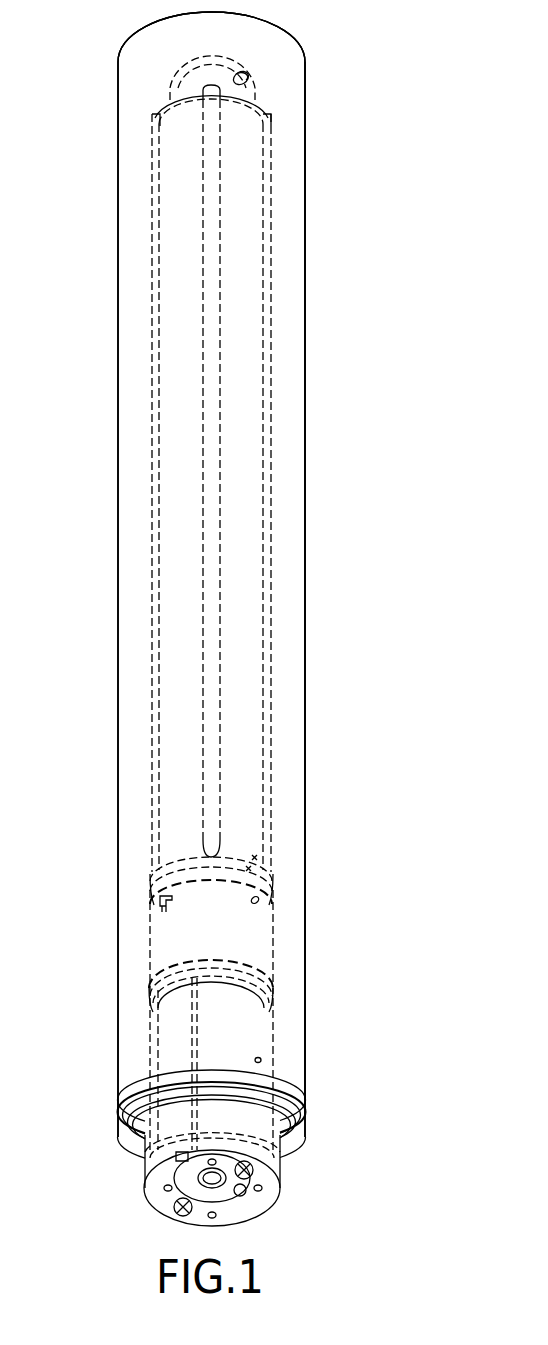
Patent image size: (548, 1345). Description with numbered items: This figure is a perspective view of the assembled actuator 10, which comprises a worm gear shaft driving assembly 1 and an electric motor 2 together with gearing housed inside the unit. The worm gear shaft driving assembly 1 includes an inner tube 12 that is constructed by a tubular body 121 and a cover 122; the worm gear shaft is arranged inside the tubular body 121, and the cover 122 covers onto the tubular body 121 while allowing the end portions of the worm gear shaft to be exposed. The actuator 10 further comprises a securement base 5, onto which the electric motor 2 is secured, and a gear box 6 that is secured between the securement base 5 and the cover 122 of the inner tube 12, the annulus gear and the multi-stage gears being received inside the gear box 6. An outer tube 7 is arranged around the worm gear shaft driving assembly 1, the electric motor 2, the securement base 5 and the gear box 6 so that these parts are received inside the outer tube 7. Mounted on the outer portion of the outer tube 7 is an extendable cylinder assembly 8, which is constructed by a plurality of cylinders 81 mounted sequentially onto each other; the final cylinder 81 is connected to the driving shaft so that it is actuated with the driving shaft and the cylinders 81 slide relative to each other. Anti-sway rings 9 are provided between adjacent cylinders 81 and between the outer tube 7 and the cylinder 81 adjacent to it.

The actuator 10 is at (68, 21).
The worm gear shaft driving assembly 1 is at (272, 525).
The extendable cylinder assembly 8 is at (310, 452).
The cylinder 81 is at (298, 413).
The inner tube 12 is at (290, 495).
The tubular body 121 is at (272, 723).
The cover 122 is at (263, 848).
The gear box 6 is at (250, 935).
The securement base 5 is at (252, 976).
The electric motor 2 is at (250, 1034).
The anti-sway ring 9 is at (303, 1128).
The outer tube 7 is at (277, 1163).